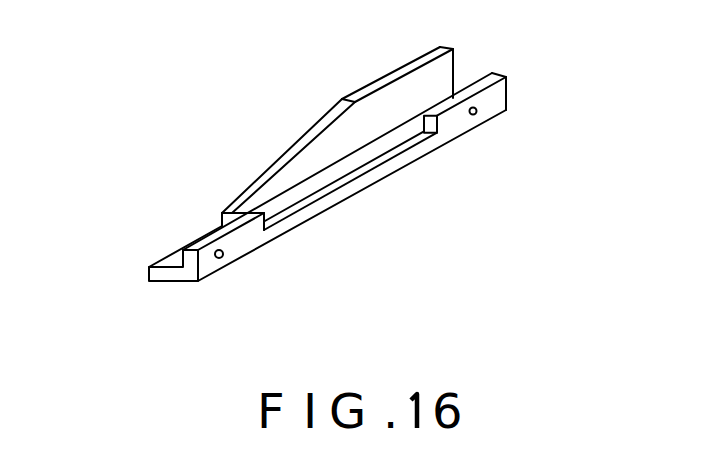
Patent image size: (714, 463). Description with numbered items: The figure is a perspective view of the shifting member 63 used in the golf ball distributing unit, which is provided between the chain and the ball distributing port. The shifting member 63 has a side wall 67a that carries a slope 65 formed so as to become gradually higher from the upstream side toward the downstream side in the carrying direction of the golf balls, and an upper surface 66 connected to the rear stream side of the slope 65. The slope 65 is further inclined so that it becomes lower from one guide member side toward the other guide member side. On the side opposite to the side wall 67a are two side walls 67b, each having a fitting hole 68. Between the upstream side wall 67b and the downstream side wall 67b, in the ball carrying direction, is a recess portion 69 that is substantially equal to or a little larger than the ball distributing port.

The shifting member 63 is at (347, 164).
The slope 65 is at (294, 150).
The upper surface 66 is at (384, 78).
The side wall 67a is at (369, 114).
The side walls 67b is at (495, 95).
The fitting hole 68 is at (221, 258).
The recess portion 69 is at (378, 170).